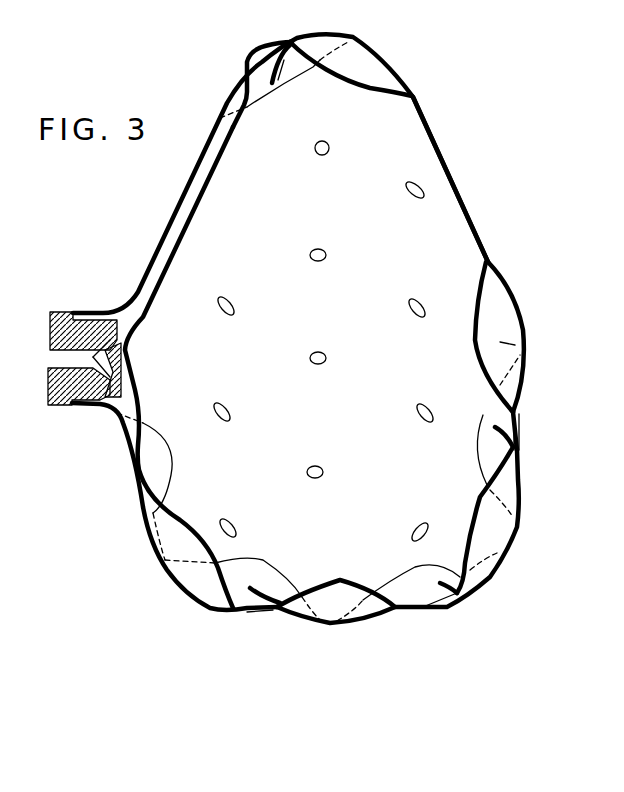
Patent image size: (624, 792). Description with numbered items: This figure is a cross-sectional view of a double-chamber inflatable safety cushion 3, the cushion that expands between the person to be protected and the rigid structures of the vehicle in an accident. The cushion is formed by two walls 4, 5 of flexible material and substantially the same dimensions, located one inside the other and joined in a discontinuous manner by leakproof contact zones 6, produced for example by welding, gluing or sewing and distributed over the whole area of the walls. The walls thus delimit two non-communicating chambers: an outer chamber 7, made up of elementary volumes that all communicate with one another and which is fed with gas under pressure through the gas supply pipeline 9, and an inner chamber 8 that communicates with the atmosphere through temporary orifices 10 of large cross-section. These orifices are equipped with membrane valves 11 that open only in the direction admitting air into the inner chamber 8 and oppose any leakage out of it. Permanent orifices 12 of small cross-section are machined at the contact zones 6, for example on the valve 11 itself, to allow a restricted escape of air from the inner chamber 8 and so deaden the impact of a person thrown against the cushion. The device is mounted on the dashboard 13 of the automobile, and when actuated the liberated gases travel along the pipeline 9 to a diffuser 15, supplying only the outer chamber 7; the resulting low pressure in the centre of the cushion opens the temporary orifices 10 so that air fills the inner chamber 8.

The inflatable safety cushion 3 is at (220, 98).
The outer wall 4 is at (523, 322).
The inner wall 5 is at (474, 357).
The leakproof contact zones 6 is at (288, 50).
The outer chamber 7 is at (500, 342).
The inner chamber 8 is at (433, 232).
The gas supply pipeline 9 is at (67, 357).
The temporary orifices 10 is at (266, 64).
The membrane valves 11 is at (281, 65).
The permanent orifices 12 is at (277, 75).
The dashboard 13 is at (62, 377).
The diffuser 15 is at (83, 405).